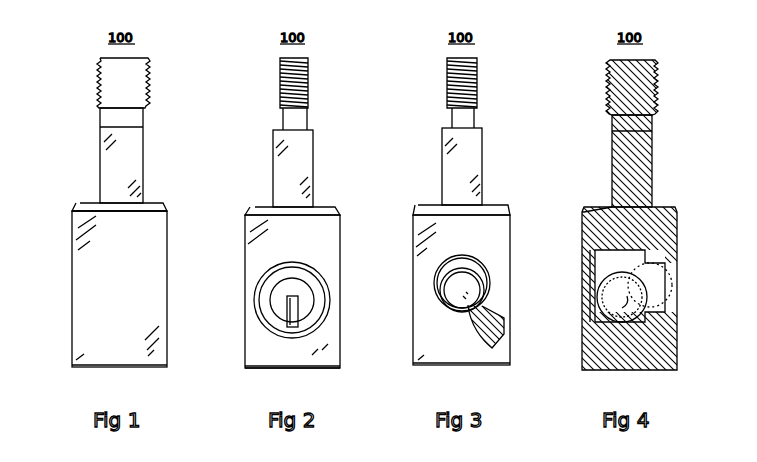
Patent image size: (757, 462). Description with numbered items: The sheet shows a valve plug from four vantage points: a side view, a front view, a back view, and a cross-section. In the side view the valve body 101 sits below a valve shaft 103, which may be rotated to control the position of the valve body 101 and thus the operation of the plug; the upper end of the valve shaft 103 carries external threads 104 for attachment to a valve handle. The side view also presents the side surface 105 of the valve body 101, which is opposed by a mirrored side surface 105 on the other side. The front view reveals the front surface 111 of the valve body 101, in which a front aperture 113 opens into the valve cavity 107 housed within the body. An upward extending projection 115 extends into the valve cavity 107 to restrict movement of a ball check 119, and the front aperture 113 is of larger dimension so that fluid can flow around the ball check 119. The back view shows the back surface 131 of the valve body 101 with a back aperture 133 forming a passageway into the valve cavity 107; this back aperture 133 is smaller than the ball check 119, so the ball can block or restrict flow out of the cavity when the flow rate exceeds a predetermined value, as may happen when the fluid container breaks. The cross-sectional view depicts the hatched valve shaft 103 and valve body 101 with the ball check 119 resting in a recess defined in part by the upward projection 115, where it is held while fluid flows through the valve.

In FIG. 1, the valve body 101 is at (72, 247).
In FIG. 1, the valve shaft 103 is at (98, 158).
In FIG. 2, the valve shaft 103 is at (270, 160).
In FIG. 3, the valve shaft 103 is at (440, 158).
In FIG. 4, the valve shaft 103 is at (609, 155).
In FIG. 1, the external threads 104 is at (152, 77).
In FIG. 2, the external threads 104 is at (312, 82).
In FIG. 3, the external threads 104 is at (481, 80).
In FIG. 4, the external threads 104 is at (632, 87).
In FIG. 1, the side surface 105 is at (102, 298).
In FIG. 2, the side surface 105 is at (242, 247).
In FIG. 3, the side surface 105 is at (514, 317).
In FIG. 4, the side surface 105 is at (629, 288).
In FIG. 2, the valve cavity 107 is at (266, 289).
In FIG. 3, the valve cavity 107 is at (487, 270).
In FIG. 2, the front surface 111 is at (308, 370).
In FIG. 2, the front aperture 113 is at (316, 301).
In FIG. 2, the upward extending projection 115 is at (287, 331).
In FIG. 3, the ball check 119 is at (470, 308).
In FIG. 4, the ball check 119 is at (630, 314).
In FIG. 3, the back surface 131 is at (498, 238).
In FIG. 3, the back aperture 133 is at (492, 288).